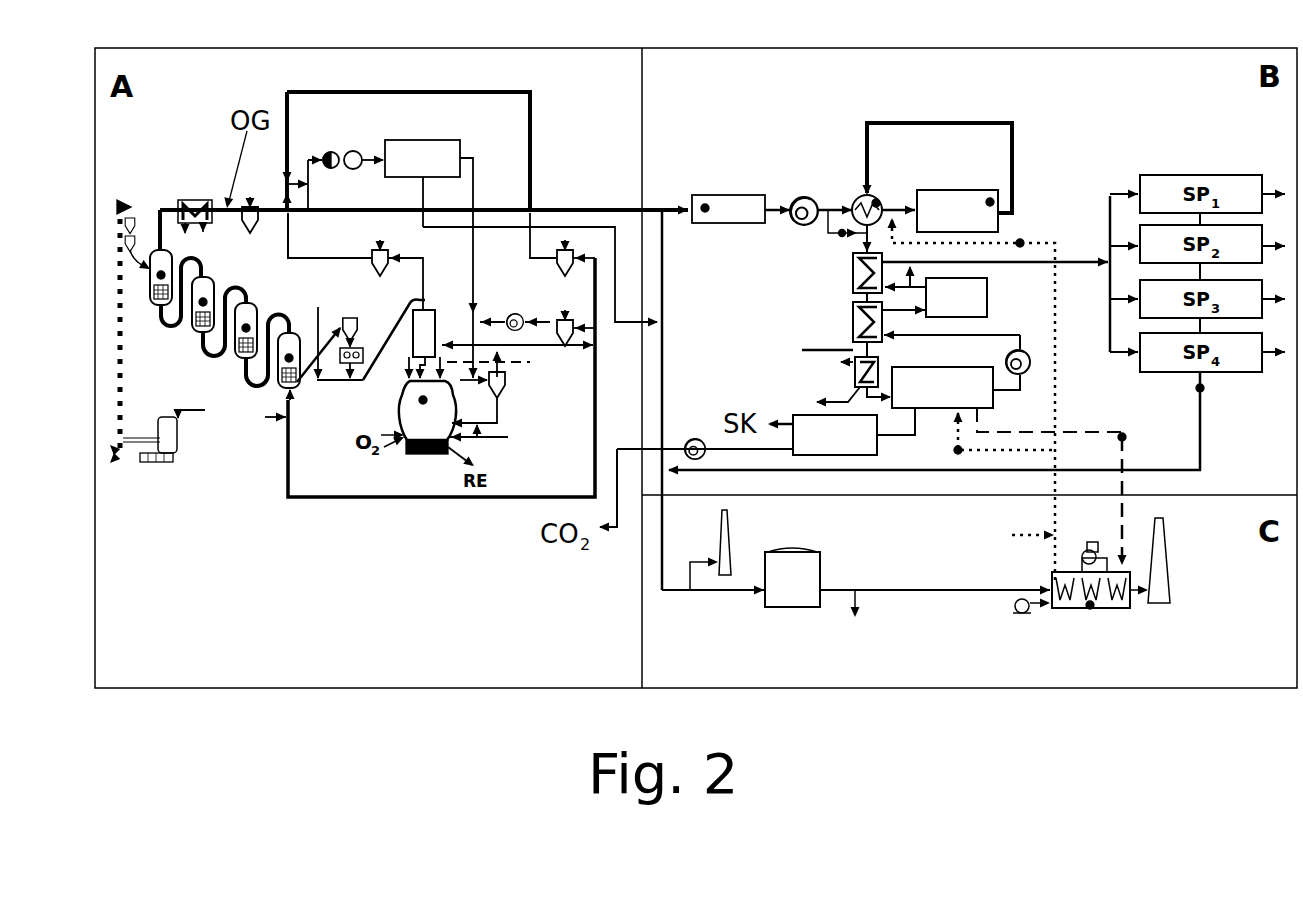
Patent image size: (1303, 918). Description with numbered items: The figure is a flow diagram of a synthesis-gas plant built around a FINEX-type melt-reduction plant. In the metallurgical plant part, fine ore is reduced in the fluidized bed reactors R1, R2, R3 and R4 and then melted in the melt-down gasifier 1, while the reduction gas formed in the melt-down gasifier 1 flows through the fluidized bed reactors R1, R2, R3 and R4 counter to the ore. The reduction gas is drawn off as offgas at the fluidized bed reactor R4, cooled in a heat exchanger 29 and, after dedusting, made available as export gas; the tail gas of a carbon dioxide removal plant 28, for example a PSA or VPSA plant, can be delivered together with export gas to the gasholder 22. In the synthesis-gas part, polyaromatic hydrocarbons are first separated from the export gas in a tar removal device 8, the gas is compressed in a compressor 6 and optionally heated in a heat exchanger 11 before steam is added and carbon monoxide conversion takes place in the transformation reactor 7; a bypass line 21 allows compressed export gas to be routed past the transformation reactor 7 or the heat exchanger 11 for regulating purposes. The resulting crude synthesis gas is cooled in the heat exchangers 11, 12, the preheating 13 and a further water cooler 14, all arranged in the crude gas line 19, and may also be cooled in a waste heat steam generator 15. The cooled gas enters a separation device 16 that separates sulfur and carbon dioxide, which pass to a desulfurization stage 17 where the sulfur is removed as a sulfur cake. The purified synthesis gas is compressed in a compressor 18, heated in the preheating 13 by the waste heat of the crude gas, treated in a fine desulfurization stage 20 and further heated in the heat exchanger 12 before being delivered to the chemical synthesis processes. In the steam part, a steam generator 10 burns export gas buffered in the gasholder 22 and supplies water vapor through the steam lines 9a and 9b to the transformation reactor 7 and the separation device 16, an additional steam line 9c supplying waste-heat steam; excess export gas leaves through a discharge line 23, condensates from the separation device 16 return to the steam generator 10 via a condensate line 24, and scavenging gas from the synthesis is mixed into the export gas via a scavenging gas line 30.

The melt-down gasifier 1 is at (422, 401).
The compressor 6 is at (795, 199).
The transformation reactor 7 is at (991, 201).
The tar removal device 8 is at (705, 206).
The steam line 9a is at (1022, 243).
The steam line 9b is at (956, 453).
The additional steam line 9c is at (1016, 538).
The steam generator 10 is at (1089, 606).
The heat exchanger 11 is at (877, 201).
The heat exchanger 12 is at (853, 282).
The preheating 13 is at (856, 333).
The water cooler 14 is at (857, 376).
The waste heat steam generator 15 is at (858, 349).
The separation device 16 is at (935, 401).
The desulfurization stage 17 is at (822, 435).
The compressor 18 is at (1028, 351).
The crude gas line 19 is at (860, 299).
The fine desulfurization stage 20 is at (956, 297).
The bypass line 21 is at (828, 212).
The gasholder 22 is at (792, 577).
The discharge line 23 is at (854, 624).
The condensate line 24 is at (1120, 434).
The CO2 removal plant 28 is at (483, 259).
The heat exchanger 29 is at (188, 200).
The scavenging gas line 30 is at (1203, 392).
The fluidized bed reactor R1 is at (285, 386).
The fluidized bed reactor R2 is at (252, 307).
The fluidized bed reactor R3 is at (212, 330).
The fluidized bed reactor R4 is at (166, 303).